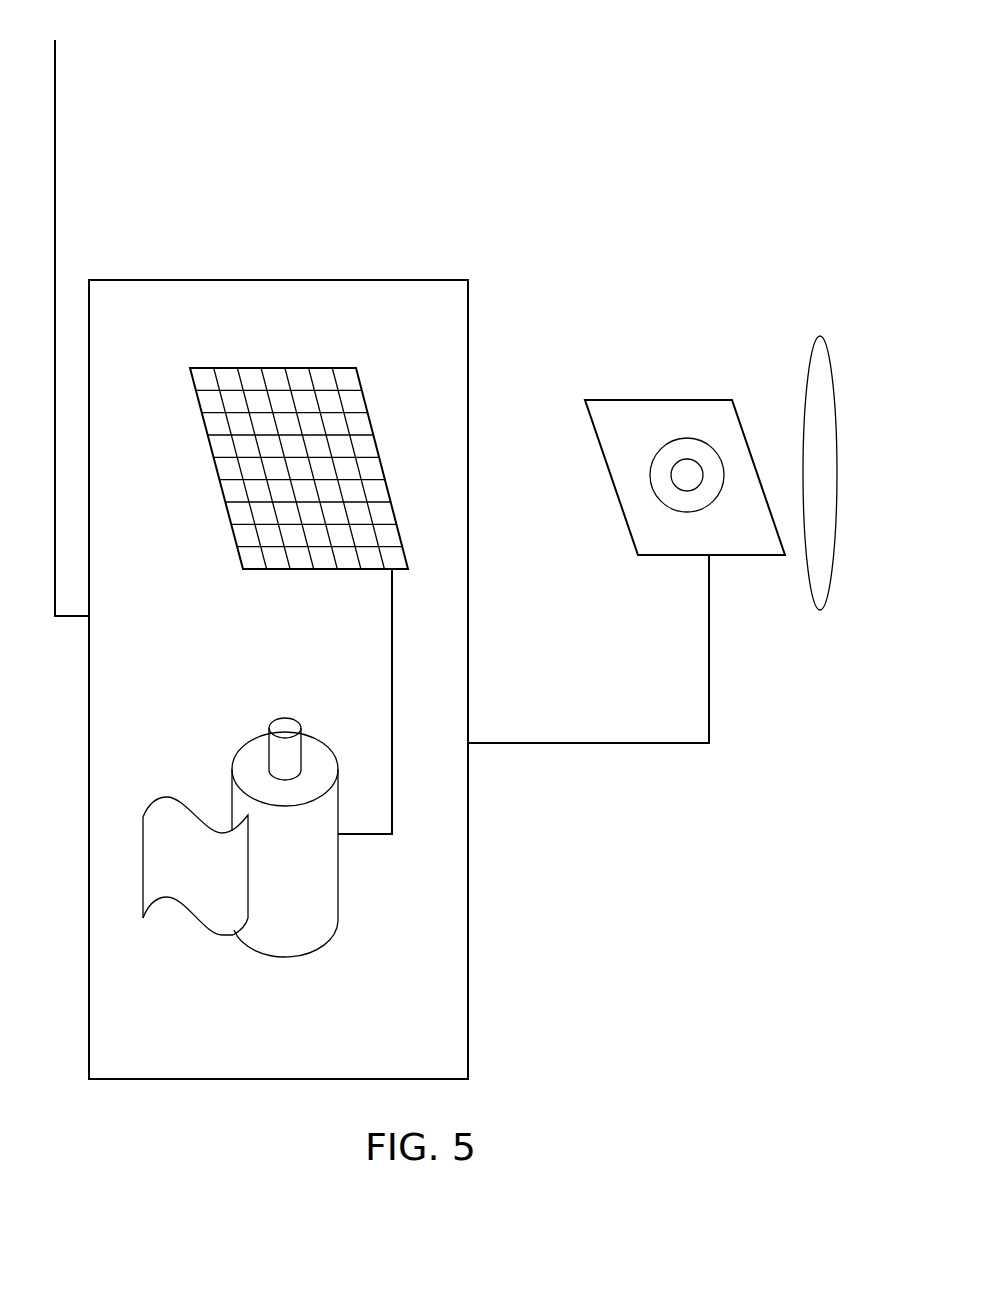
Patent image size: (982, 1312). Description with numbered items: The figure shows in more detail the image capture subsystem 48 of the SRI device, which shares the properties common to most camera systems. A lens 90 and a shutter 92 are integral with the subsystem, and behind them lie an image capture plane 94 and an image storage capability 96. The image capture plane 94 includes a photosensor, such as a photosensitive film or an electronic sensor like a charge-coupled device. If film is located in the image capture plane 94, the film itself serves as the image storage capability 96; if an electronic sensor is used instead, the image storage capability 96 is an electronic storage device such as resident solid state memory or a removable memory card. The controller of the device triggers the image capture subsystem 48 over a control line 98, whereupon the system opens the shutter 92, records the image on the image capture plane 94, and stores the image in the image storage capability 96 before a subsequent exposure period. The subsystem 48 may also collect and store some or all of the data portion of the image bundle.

The image capture subsystem 48 is at (588, 100).
The lens 90 is at (820, 610).
The shutter 92 is at (638, 400).
The image capture plane 94 is at (296, 368).
The image storage capability 96 is at (338, 900).
The control line 98 is at (55, 122).